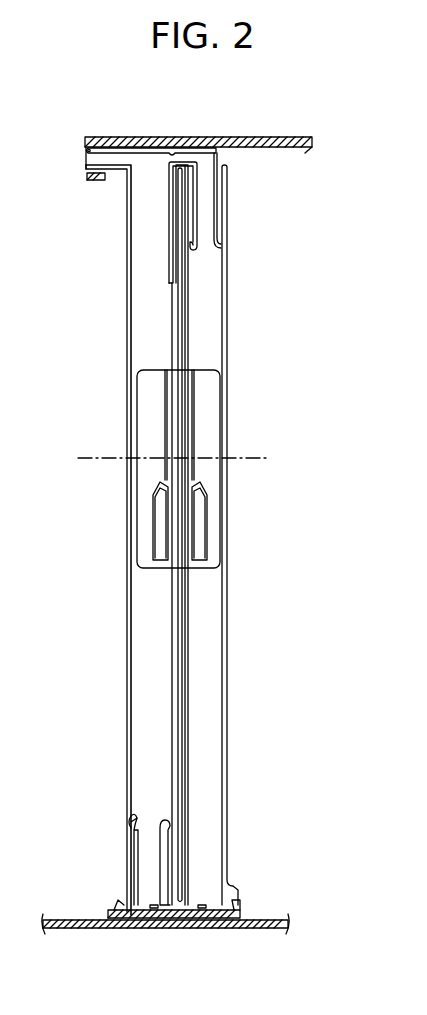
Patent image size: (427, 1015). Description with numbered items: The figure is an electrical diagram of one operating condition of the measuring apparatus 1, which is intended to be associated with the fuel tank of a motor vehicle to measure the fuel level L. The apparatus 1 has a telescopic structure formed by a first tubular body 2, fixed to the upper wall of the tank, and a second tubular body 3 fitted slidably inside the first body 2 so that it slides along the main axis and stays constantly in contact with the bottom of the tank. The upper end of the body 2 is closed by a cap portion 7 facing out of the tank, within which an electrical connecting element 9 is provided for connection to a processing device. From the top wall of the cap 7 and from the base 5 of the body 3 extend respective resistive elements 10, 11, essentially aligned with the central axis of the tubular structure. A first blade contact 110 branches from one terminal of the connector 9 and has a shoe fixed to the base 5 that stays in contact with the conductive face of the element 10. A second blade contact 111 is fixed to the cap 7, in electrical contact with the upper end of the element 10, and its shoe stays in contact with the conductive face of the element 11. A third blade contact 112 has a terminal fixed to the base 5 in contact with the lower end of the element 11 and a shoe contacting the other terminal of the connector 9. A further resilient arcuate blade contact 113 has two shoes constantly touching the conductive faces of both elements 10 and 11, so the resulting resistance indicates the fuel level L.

The measuring apparatus 1 is at (255, 362).
The first tubular body 2 is at (310, 152).
The second tubular body 3 is at (244, 896).
The base 5 is at (203, 929).
The cap portion 7 is at (192, 138).
The electrical connecting element 9 is at (84, 159).
The resistive element 10 is at (176, 298).
The resistive element 11 is at (190, 298).
The first blade contact 110 is at (120, 816).
The second blade contact 111 is at (166, 211).
The third blade contact 112 is at (230, 227).
The further electrical blade contact 113 is at (206, 520).
The level L is at (252, 455).